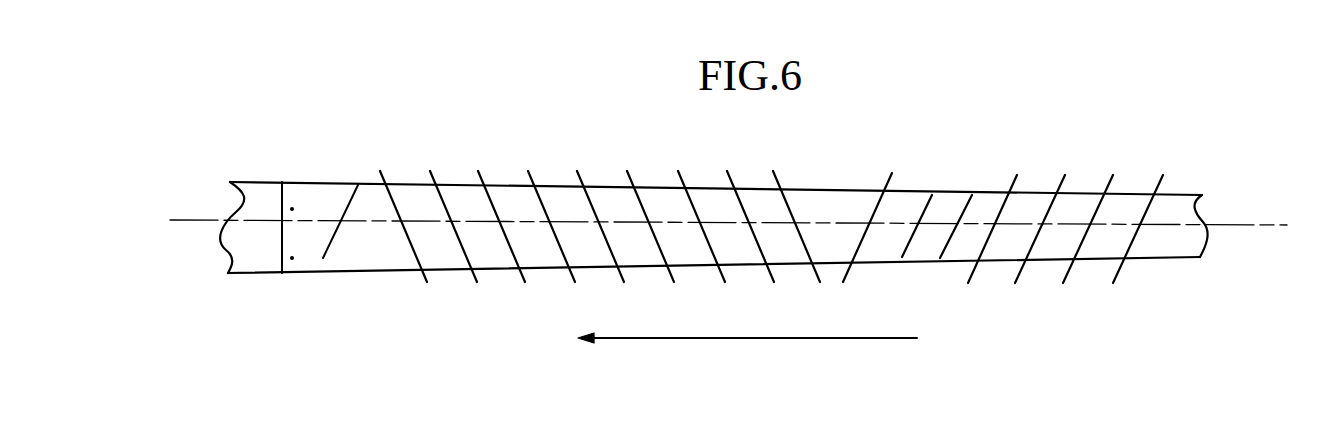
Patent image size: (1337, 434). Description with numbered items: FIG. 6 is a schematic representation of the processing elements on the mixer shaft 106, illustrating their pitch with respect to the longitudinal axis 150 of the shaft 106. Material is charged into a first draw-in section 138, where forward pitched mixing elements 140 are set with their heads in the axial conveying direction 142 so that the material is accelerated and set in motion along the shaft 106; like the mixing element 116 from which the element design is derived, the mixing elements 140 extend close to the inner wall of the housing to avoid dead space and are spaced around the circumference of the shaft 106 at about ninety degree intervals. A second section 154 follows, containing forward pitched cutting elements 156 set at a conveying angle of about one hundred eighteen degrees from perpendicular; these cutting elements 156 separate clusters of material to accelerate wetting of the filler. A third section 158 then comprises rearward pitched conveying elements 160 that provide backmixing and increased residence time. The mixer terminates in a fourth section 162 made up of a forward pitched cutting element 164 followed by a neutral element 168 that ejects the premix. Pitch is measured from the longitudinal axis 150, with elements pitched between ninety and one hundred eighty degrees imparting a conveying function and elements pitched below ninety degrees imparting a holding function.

The shaft 106 is at (1200, 257).
The mixing element 116 is at (880, 180).
The first draw-in section 138 is at (995, 162).
The mixing elements 140 is at (973, 272).
The axial conveying direction 142 is at (722, 338).
The longitudinal axis 150 is at (1250, 225).
The second section 154 is at (878, 162).
The cutting elements 156 is at (912, 240).
The third section 158 is at (365, 163).
The rearward pitched conveying elements 160 is at (427, 276).
The fourth section 162 is at (365, 172).
The forward pitched cutting element 164 is at (338, 241).
The neutral element 168 is at (278, 250).